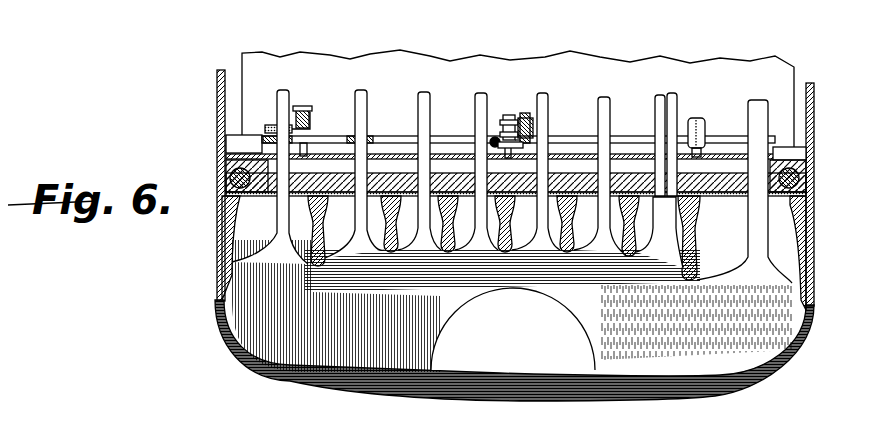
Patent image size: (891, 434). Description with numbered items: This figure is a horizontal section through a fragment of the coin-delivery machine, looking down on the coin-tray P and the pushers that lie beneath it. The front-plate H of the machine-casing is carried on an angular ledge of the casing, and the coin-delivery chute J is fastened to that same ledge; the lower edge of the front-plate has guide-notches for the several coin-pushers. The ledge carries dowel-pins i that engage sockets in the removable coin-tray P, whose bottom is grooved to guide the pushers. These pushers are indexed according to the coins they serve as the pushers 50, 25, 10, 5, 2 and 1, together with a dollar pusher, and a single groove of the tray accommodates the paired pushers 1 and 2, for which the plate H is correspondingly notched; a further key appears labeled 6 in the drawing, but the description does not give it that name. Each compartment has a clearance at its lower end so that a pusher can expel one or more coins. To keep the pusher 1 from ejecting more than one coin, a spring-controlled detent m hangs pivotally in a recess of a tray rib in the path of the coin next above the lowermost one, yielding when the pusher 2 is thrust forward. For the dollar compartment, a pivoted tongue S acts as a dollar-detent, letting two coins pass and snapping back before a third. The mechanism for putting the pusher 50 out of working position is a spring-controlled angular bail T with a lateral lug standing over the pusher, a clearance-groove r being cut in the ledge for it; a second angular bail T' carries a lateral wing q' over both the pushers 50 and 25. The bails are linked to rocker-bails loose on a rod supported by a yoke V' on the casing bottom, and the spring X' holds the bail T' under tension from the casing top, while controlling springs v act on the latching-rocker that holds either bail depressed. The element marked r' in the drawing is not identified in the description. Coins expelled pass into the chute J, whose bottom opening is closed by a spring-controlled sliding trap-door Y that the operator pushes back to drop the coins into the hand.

The coin-pusher 50 is at (285, 96).
The coin-pusher 25 is at (362, 97).
The coin-pusher 10 is at (428, 98).
The five-cent coin key/pin 6 is at (545, 97).
The coin-pusher 5 is at (520, 218).
The coin-pusher 2 is at (603, 100).
The coin-pusher 1 is at (674, 97).
The coin-tray P is at (215, 160).
The dowel-pins i is at (222, 194).
The lateral wing q' is at (511, 131).
The angular bail T is at (512, 115).
The angular bail T' is at (551, 128).
The spring X' is at (481, 129).
The supporting yoke V' is at (550, 148).
The front-plate H is at (624, 157).
The controlling springs v is at (516, 180).
The clearance-groove r is at (272, 268).
The separator tooth r' is at (334, 242).
The detent m is at (640, 258).
The tongue S is at (713, 281).
The trap-door Y is at (505, 345).
The coin-delivery chute J is at (243, 355).